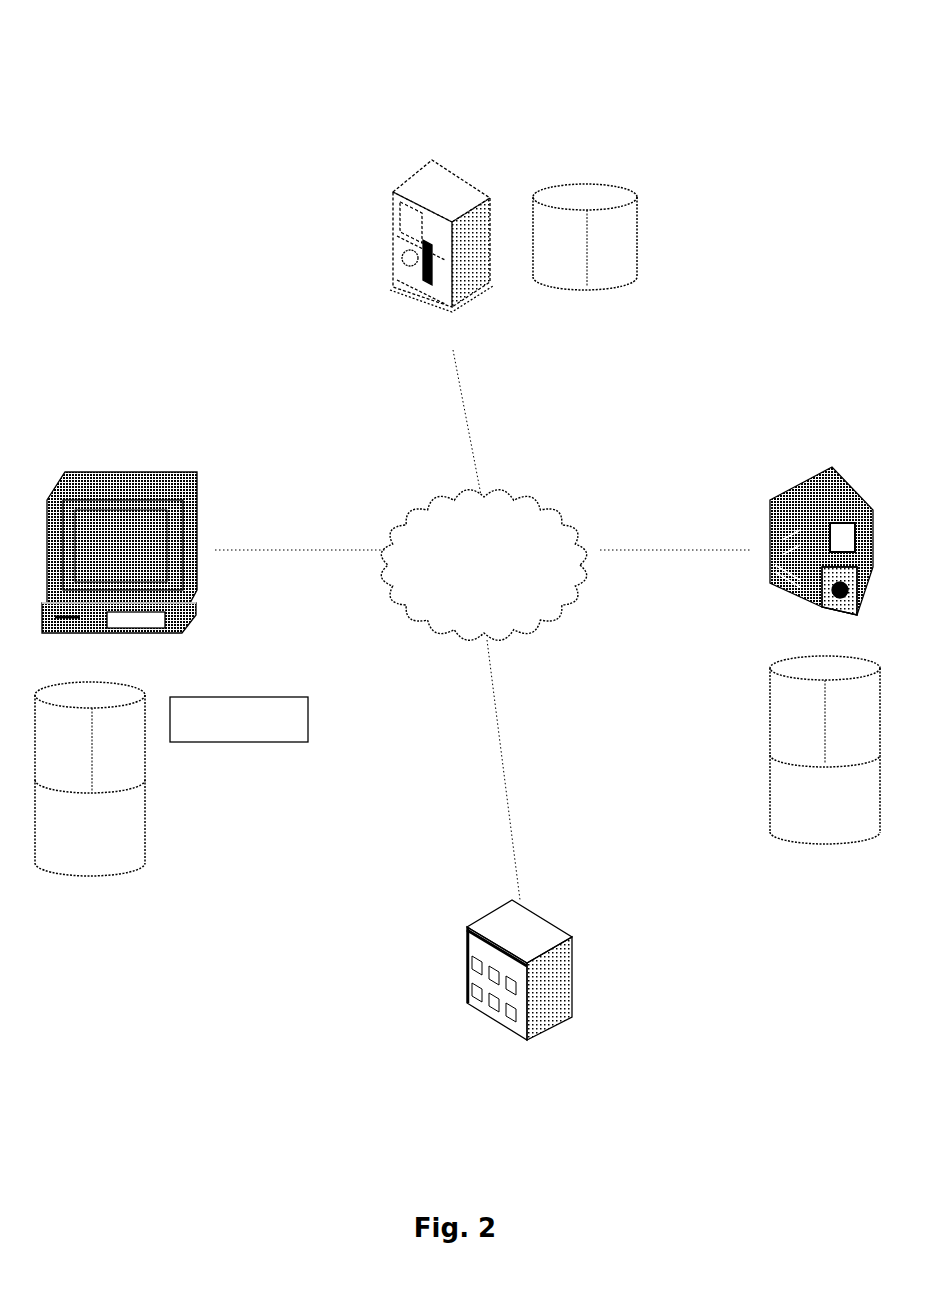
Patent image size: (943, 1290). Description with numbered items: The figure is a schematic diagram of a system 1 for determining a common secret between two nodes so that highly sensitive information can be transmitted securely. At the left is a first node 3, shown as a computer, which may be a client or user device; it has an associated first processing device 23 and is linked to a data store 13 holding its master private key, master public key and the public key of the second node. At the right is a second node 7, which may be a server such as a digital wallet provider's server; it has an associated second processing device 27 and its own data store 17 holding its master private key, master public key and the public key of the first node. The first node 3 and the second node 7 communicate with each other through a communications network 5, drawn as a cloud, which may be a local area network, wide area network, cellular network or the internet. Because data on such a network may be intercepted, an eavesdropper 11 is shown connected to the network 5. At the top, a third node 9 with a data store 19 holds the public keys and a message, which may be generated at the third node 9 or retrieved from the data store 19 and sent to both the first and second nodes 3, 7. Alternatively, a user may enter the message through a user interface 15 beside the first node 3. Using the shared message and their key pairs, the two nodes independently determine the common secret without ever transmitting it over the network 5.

The system 1 is at (225, 100).
The first node 3 is at (150, 482).
The communications network 5 is at (540, 527).
The second node 7 is at (812, 492).
The third node 9 is at (420, 185).
The eavesdropper 11 is at (530, 937).
The data store 13 is at (92, 852).
The user interface 15 is at (246, 718).
The data store 17 is at (815, 820).
The data store 19 is at (630, 228).
The first processing device 23 is at (165, 617).
The second processing device 27 is at (848, 535).